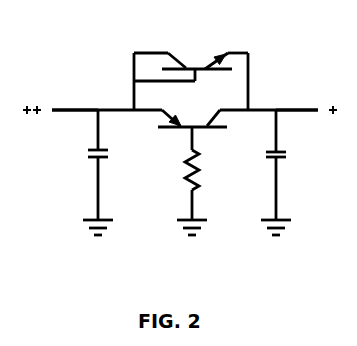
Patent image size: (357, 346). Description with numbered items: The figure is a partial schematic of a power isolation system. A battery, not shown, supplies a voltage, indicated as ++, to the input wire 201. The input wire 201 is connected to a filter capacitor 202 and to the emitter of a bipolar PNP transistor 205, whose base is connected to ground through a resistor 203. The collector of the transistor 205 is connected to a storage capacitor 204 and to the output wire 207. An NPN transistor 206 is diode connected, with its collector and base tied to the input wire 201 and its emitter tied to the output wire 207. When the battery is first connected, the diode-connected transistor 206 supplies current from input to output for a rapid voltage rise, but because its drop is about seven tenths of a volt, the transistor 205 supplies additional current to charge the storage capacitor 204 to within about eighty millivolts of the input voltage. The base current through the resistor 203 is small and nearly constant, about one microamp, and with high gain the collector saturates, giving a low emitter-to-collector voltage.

The input wire 201 is at (73, 109).
The filter capacitor 202 is at (103, 157).
The resistor 203 is at (202, 168).
The storage capacitor 204 is at (283, 153).
The bipolar PNP transistor 205 is at (192, 121).
The NPN transistor 206 is at (199, 68).
The output wire 207 is at (302, 107).